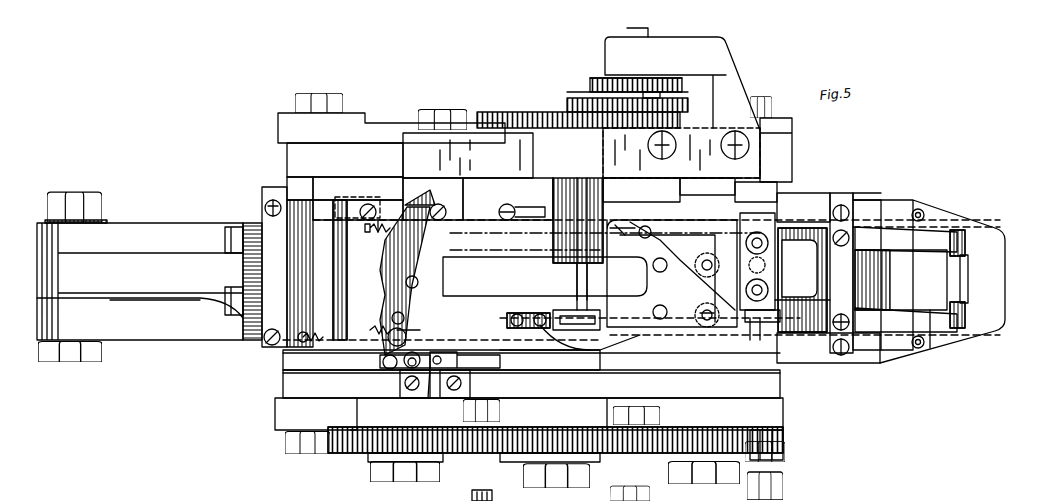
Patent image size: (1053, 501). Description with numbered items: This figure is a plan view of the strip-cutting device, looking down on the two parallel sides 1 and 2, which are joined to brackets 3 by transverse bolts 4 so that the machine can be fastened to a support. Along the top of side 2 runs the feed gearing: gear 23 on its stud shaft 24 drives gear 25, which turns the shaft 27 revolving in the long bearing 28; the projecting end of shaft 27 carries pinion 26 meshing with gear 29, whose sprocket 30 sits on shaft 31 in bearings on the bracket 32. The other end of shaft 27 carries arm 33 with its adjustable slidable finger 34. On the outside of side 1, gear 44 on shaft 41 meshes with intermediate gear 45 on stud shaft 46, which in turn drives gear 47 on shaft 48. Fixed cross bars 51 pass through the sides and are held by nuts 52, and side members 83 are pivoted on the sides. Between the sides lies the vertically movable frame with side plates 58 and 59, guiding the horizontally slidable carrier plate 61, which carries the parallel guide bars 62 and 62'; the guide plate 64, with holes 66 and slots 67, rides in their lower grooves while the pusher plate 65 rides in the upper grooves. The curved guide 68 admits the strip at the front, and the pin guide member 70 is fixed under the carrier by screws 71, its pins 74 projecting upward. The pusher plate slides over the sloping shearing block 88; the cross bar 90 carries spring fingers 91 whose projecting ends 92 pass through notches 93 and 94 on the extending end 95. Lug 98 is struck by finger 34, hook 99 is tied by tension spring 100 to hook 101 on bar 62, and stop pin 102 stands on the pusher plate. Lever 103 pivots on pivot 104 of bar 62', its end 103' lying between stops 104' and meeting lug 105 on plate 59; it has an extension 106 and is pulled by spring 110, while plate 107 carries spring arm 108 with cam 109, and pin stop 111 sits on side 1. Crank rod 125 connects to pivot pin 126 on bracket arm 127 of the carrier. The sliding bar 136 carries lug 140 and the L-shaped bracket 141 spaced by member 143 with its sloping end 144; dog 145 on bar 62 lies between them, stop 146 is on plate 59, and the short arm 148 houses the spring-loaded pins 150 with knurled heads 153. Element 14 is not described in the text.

The side plate 1 is at (283, 397).
The side plate 2 is at (287, 163).
The bracket 3 is at (350, 122).
The transverse bolt 4 is at (315, 100).
The plate 14 is at (672, 264).
The gear 23 is at (483, 112).
The stud shaft 24 is at (562, 112).
The gear 25 is at (572, 98).
The pinion 26 is at (592, 80).
The shaft 27 is at (588, 274).
The long bearing 28 is at (543, 190).
The gear 29 is at (688, 107).
The sprocket 30 is at (643, 94).
The shaft 31 is at (627, 31).
The bracket 32 is at (685, 52).
The arm 33 is at (555, 312).
The slidable finger 34 is at (590, 313).
The shaft 41 is at (705, 478).
The gear 44 is at (785, 445).
The intermediate gear 45 is at (560, 430).
The stud shaft 46 is at (555, 488).
The gear 47 is at (362, 452).
The shaft 48 is at (425, 483).
The cross bar 51 is at (561, 492).
The nut 52 is at (500, 413).
The side plate of vertically movable frame 58 is at (283, 375).
The side plate of vertically movable frame 59 is at (338, 187).
The carrier plate 61 is at (262, 355).
The side guide bar 62 is at (646, 198).
The side guide bar 62' is at (828, 359).
The guide plate 64 is at (647, 285).
The pusher plate 65 is at (345, 298).
The hole 66 is at (705, 305).
The longitudinal slot 67 is at (812, 252).
The curved guide 68 is at (262, 318).
The guide member 70 is at (745, 325).
The screw 71 is at (760, 337).
The pin 74 is at (695, 265).
The side member 83 is at (660, 400).
The shearing block 88 is at (955, 348).
The cross bar 90 is at (855, 225).
The spring finger 91 is at (915, 240).
The inwardly projecting end 92 is at (965, 240).
The notch 93 is at (968, 290).
The notch 94 is at (870, 295).
The extending end of pusher plate 95 is at (935, 320).
The lug 98 is at (555, 350).
The hook 99 is at (650, 220).
The tension spring 100 is at (385, 222).
The hook 101 is at (372, 232).
The stop pin 102 is at (417, 289).
The lever 103 is at (391, 288).
The lever end 103' is at (420, 182).
The pivot 104 is at (413, 337).
The stop 104' is at (383, 179).
The lug 105 is at (287, 188).
The extension 106 is at (380, 362).
The plate 107 is at (542, 365).
The spring arm 108 is at (488, 370).
The cam 109 is at (452, 360).
The tension spring 110 is at (288, 370).
The pin stop 111 is at (428, 398).
The crank rod 125 is at (157, 333).
The pivot pin 126 is at (90, 200).
The bracket arm 127 is at (165, 212).
The sliding bar 136 is at (775, 147).
The lug 140 is at (462, 186).
The L-shaped bracket 141 is at (562, 180).
The spacing member 143 is at (628, 185).
The sloping end 144 is at (692, 182).
The dog 145 is at (528, 205).
The stop 146 is at (738, 190).
The short arm 148 is at (770, 298).
The pin 150 is at (748, 244).
The knurled head 153 is at (760, 235).